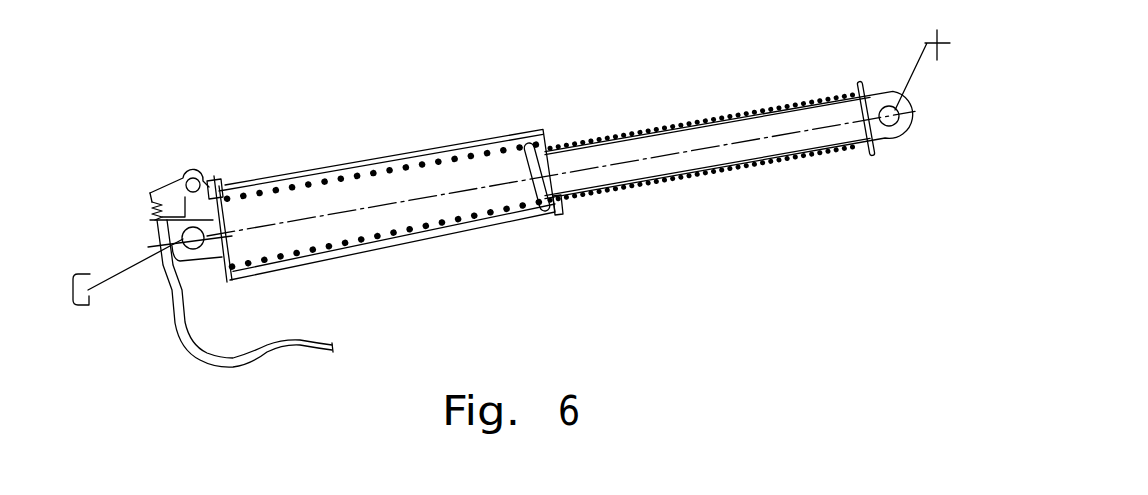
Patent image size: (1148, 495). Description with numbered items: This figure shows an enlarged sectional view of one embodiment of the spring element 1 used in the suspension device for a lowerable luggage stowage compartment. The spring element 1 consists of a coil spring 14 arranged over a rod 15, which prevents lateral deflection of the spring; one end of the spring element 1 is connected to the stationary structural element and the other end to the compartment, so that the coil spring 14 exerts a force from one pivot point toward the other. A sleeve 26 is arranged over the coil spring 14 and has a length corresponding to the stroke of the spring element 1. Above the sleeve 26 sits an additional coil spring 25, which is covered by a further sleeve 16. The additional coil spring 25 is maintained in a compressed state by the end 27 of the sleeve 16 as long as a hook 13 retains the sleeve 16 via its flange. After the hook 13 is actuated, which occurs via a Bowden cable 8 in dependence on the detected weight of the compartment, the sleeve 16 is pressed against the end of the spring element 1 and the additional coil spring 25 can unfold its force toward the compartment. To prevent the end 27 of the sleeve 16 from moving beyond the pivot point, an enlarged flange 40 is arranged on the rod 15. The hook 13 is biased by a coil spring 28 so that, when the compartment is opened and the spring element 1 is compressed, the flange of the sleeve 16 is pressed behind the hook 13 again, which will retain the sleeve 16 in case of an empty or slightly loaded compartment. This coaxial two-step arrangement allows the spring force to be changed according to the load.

The spring element 1 is at (505, 237).
The Bowden cable 8 is at (175, 303).
The hook 13 is at (214, 180).
The coil spring 14 is at (777, 107).
The rod 15 is at (655, 155).
The sleeve 16 is at (355, 162).
The additional coil spring 25 is at (409, 165).
The sleeve 26 is at (400, 213).
The end of sleeve 27 is at (547, 132).
The coil spring 28 is at (152, 203).
The enlarged flange 40 is at (863, 87).